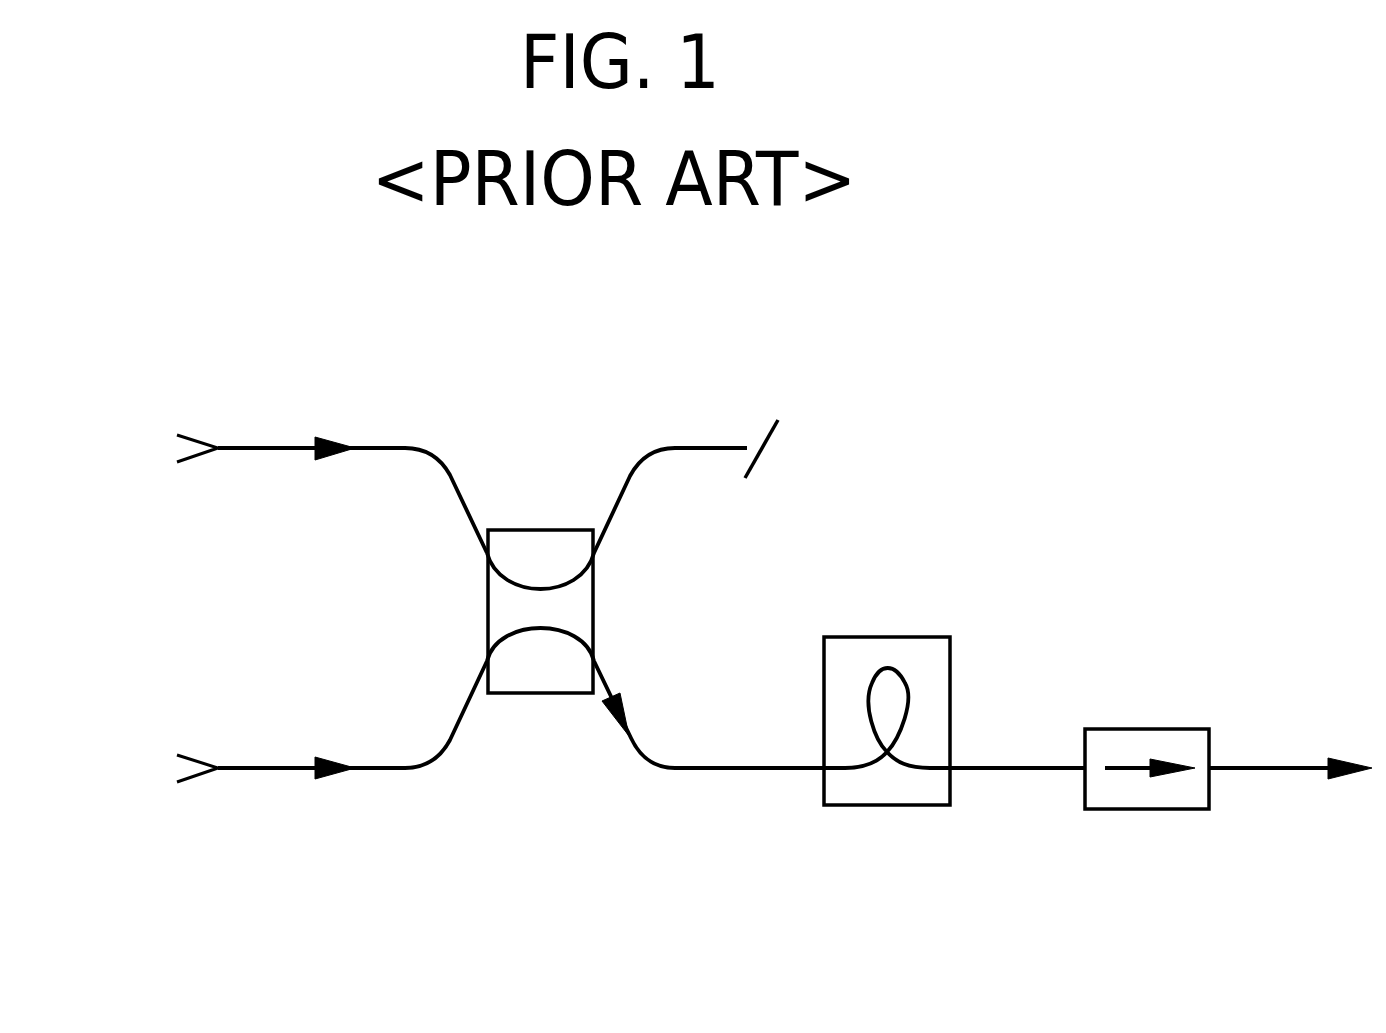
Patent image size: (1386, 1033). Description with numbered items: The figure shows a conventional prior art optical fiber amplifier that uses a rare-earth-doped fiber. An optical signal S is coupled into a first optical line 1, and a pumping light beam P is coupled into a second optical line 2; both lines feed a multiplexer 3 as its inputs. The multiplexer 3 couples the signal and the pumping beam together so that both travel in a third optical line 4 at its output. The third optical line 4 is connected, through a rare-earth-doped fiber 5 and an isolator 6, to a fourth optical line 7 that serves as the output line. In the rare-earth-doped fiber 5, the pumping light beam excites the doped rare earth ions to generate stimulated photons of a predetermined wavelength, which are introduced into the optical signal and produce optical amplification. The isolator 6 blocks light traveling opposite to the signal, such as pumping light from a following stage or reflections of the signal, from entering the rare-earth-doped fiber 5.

The first optical line 1 is at (271, 770).
The second optical line 2 is at (267, 448).
The multiplexer 3 is at (532, 695).
The third optical line 4 is at (750, 770).
The rare-earth-doped fiber 5 is at (895, 635).
The isolator 6 is at (1148, 727).
The fourth optical line 7 is at (1282, 766).